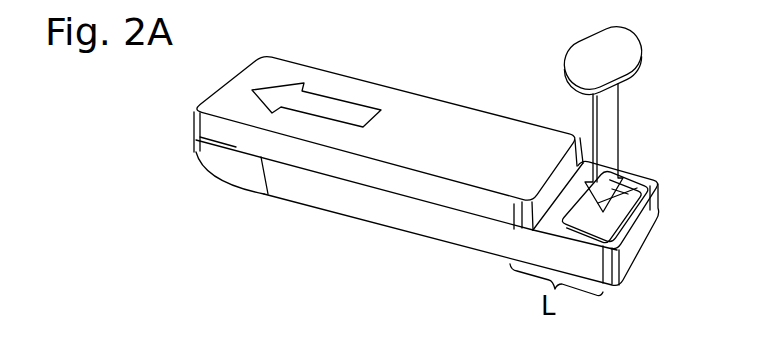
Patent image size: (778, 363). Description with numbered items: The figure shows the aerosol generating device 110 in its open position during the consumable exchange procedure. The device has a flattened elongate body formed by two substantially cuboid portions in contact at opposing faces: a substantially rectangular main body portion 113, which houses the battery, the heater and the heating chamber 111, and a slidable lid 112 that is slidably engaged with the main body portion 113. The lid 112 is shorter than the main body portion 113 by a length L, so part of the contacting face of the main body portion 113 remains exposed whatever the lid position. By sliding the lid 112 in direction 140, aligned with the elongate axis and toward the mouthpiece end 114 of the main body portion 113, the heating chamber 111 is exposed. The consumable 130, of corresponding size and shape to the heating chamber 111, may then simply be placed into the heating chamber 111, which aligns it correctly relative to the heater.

The aerosol generating device 110 is at (215, 183).
The heating chamber 111 is at (638, 178).
The lid 112 is at (440, 120).
The main body portion 113 is at (341, 197).
The mouthpiece end 114 is at (197, 153).
The consumable 130 is at (620, 39).
The direction 140 is at (317, 96).